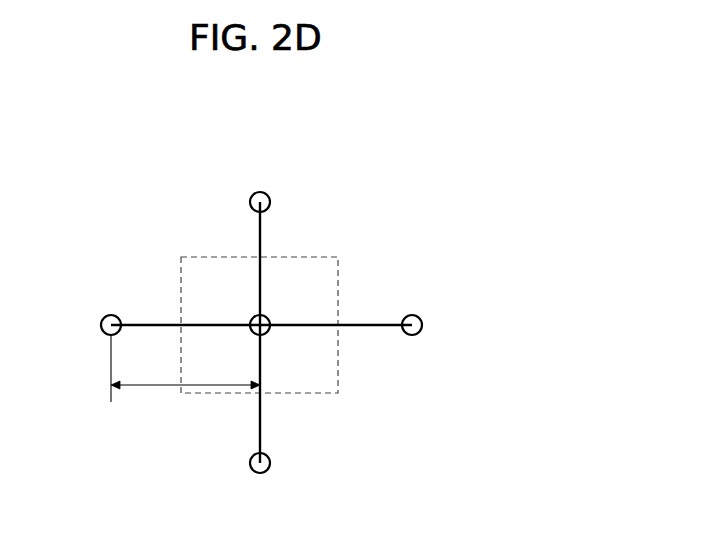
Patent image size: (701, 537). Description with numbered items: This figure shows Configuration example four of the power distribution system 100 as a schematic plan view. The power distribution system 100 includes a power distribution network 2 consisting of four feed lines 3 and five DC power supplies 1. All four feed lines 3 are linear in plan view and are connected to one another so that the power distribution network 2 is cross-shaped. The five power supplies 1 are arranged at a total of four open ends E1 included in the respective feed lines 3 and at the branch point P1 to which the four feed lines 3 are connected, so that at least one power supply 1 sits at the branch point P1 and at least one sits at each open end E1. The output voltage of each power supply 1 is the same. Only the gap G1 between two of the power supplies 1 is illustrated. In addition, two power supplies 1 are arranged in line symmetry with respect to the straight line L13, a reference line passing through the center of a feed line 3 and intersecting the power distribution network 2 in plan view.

The power distribution system 100 is at (410, 153).
The power supply 1 is at (261, 203).
The power distribution network 2 is at (361, 328).
The feed line 3 is at (261, 278).
The open end E1 is at (265, 209).
The branch point P1 is at (266, 333).
The gap G1 is at (194, 384).
The straight line L13 is at (202, 412).